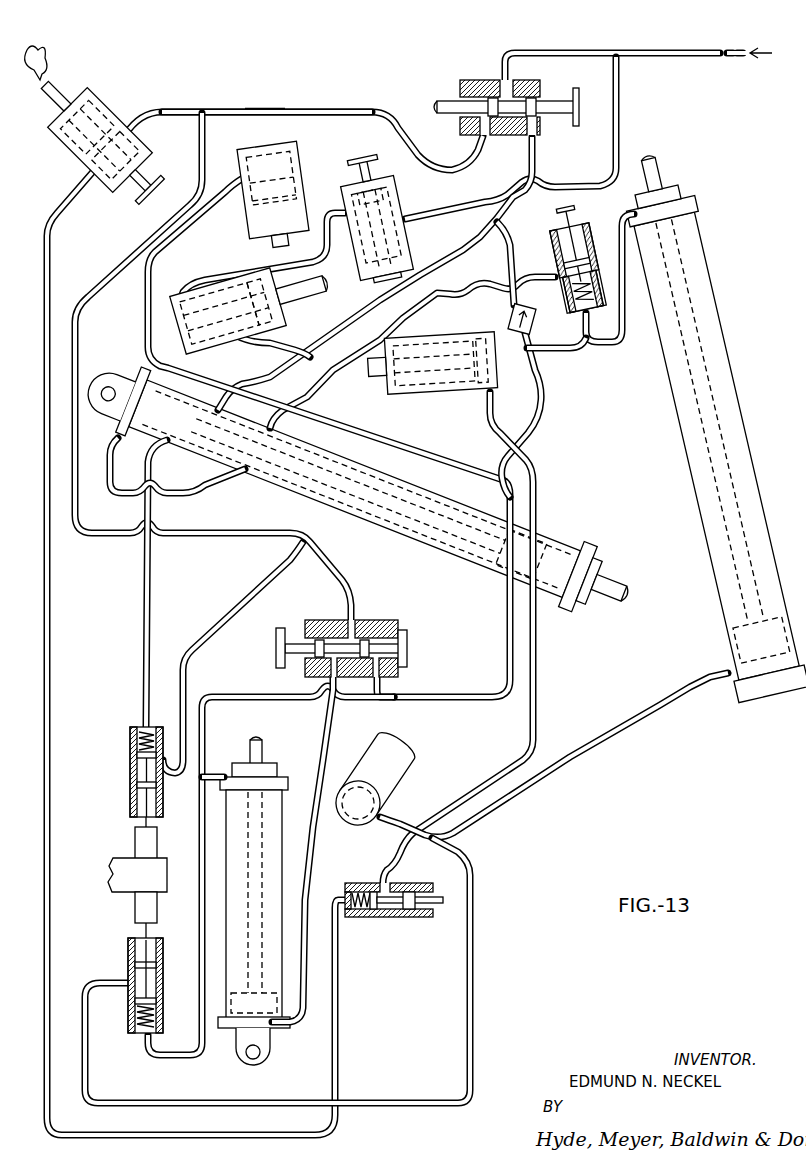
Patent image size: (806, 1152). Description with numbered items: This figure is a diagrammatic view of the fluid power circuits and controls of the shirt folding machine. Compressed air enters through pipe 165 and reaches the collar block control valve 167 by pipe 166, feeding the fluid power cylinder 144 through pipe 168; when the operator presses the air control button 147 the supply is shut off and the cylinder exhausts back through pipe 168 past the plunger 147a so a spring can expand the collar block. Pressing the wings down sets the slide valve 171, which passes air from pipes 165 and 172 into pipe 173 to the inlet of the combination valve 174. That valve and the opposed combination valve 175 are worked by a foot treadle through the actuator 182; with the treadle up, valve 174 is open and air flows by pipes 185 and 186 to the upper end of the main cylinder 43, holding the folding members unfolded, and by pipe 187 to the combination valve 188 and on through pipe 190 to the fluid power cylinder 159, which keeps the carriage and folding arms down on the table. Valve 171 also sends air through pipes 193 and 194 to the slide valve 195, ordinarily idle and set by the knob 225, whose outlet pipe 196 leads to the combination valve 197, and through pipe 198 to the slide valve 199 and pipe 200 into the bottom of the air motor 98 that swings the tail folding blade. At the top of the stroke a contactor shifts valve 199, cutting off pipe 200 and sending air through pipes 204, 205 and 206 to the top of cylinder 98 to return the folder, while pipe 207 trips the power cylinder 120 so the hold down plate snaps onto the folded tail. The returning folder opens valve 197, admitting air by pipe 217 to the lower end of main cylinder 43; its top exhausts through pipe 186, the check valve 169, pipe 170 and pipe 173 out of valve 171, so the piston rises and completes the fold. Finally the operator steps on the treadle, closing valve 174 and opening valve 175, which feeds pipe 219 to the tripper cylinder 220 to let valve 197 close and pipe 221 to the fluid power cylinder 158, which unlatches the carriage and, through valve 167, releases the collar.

The main cylinder 43 is at (703, 273).
The air motor 98 is at (277, 830).
The power cylinder 120 is at (260, 157).
The fluid power cylinder 144 is at (253, 337).
The air control button 147 is at (353, 146).
The plunger 147a is at (337, 179).
The fluid power cylinder 158 is at (437, 395).
The fluid power cylinder 159 is at (263, 485).
The pipe 165 is at (673, 50).
The pipe 166 is at (618, 97).
The valve 167 is at (375, 208).
The pipe 168 is at (233, 277).
The check valve 169 is at (510, 319).
The pipe 170 is at (512, 298).
The slide valve 171 is at (473, 80).
The pipe 172 is at (576, 40).
The pipe 173 is at (446, 268).
The combination valve 174 is at (130, 742).
The combination valve 175 is at (128, 948).
The actuator 182 is at (133, 842).
The pipe 185 is at (233, 613).
The pipe 186 is at (575, 344).
The pipe 187 is at (584, 329).
The combination valve 188 is at (557, 256).
The pipe 190 is at (467, 292).
The pipe 193 is at (257, 110).
The pipe 194 is at (170, 110).
The slide valve 195 is at (100, 110).
The pipe 196 is at (50, 607).
The combination valve 197 is at (393, 917).
The pipe 198 is at (117, 263).
The slide valve 199 is at (385, 618).
The pipe 200 is at (323, 733).
The pipe 204 is at (383, 684).
The pipe 205 is at (243, 698).
The pipe 206 is at (212, 772).
The pipe 207 is at (507, 598).
The pipe 217 is at (609, 734).
The pipe 219 is at (400, 1097).
The tripper cylinder 220 is at (408, 755).
The pipe 221 is at (536, 697).
The knob 225 is at (36, 52).